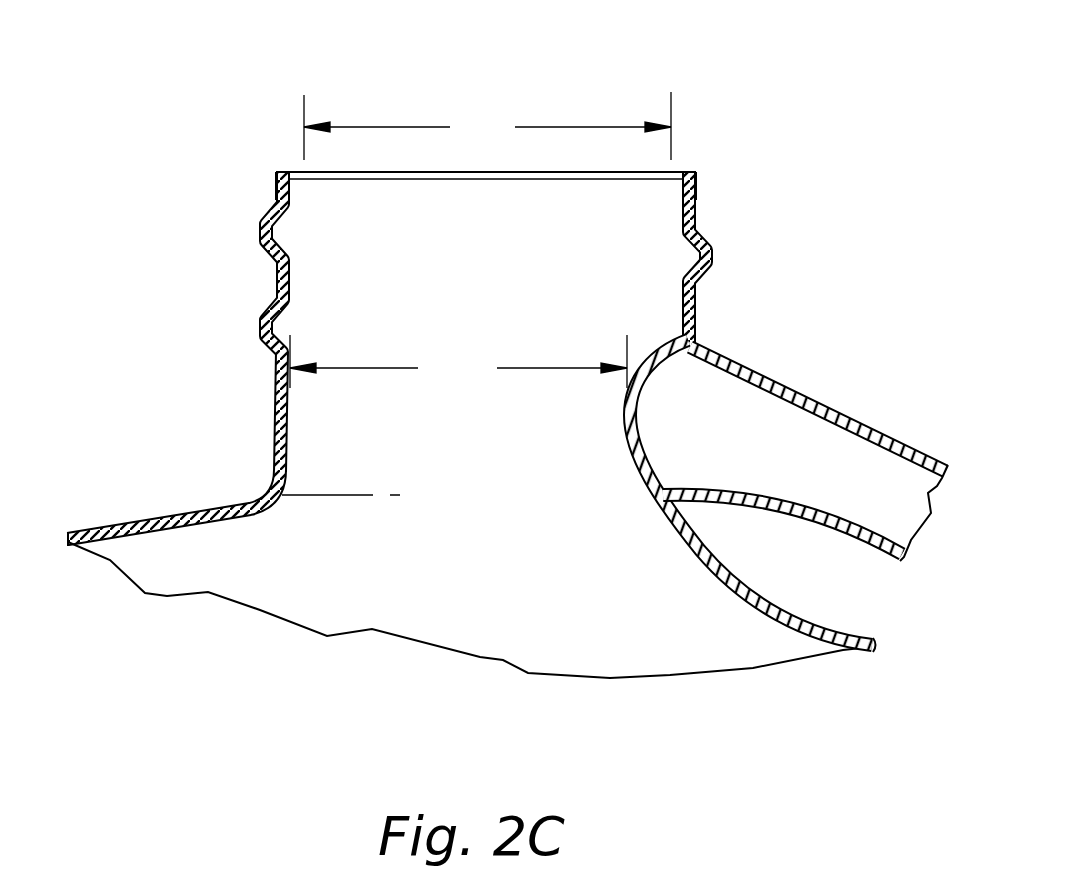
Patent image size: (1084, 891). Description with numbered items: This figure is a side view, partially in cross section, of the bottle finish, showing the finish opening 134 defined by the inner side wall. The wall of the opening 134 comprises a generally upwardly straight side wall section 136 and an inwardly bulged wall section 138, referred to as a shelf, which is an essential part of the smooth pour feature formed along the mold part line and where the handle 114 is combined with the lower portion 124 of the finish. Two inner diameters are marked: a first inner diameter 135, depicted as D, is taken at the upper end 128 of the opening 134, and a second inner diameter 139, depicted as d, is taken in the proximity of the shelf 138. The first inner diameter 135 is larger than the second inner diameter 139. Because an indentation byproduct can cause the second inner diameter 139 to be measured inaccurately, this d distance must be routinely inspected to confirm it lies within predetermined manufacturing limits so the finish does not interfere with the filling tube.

The handle 114 is at (783, 379).
The lower end of the finish 124 is at (258, 486).
The upper end of the finish 128 is at (498, 292).
The finish opening 134 is at (553, 95).
The first inner diameter 135 is at (386, 127).
The upwardly straight side wall section 136 is at (293, 275).
The inwardly bulged wall section 138 is at (646, 352).
The second inner diameter 139 is at (373, 369).